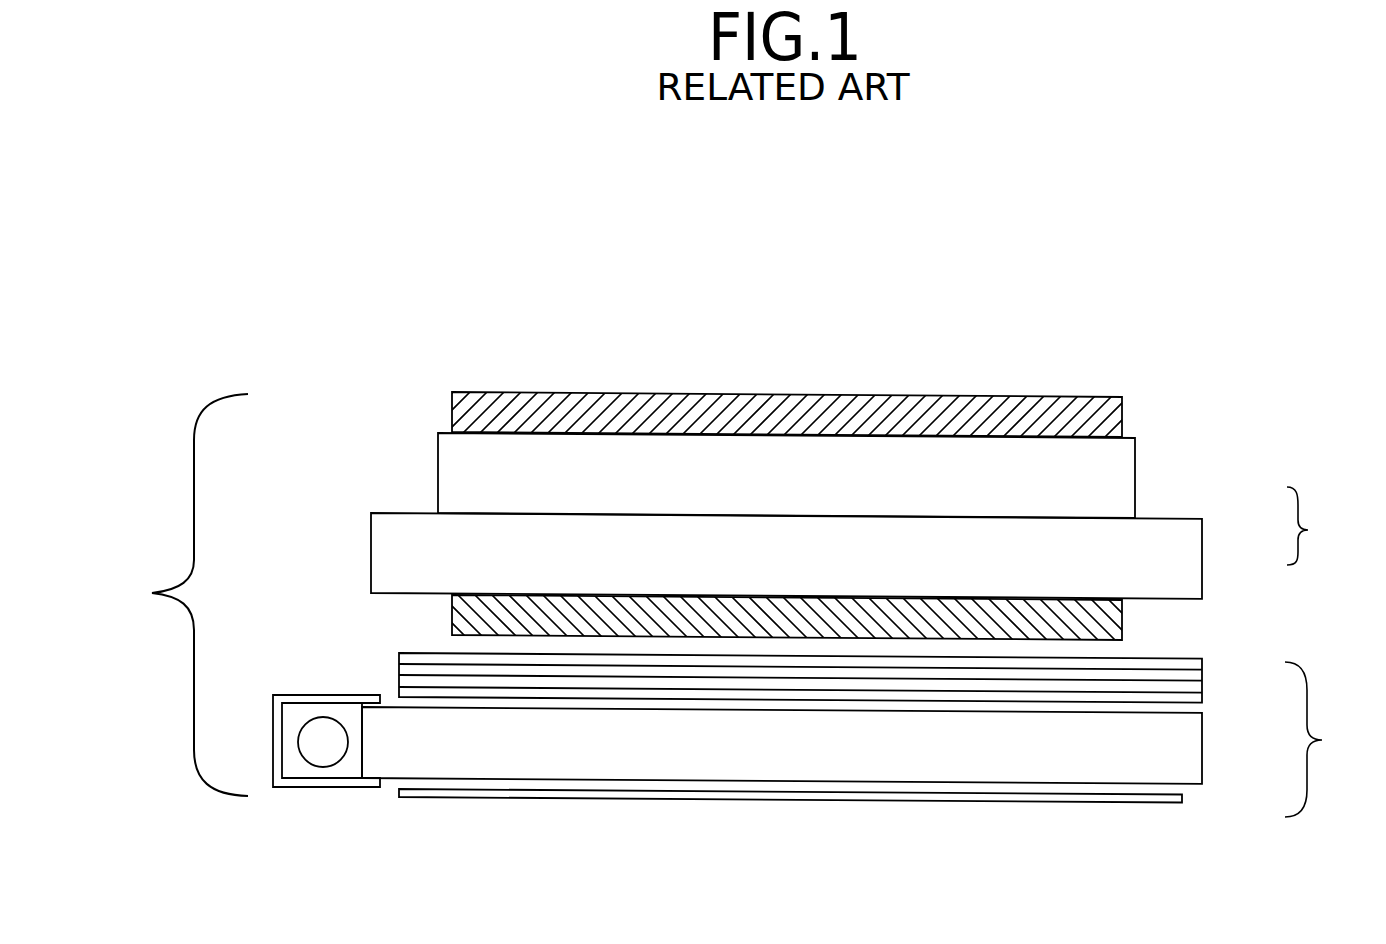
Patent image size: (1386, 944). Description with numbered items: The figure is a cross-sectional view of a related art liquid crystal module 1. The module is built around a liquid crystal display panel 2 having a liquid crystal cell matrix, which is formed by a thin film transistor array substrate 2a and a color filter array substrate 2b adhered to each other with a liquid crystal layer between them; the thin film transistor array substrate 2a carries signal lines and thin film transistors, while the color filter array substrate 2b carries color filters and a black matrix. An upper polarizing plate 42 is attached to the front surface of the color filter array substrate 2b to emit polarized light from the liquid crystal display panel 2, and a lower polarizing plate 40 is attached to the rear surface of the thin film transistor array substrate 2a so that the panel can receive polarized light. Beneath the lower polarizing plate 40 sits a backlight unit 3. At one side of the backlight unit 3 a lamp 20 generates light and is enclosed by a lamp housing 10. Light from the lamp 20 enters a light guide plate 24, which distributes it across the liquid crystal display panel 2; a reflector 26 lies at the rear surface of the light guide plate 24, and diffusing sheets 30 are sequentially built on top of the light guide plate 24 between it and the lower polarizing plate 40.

The liquid crystal module 1 is at (186, 595).
The liquid crystal display panel 2 is at (851, 516).
The thin film transistor array substrate 2a is at (1200, 563).
The color filter array substrate 2b is at (1120, 485).
The lower polarizing plate 40 is at (1122, 621).
The upper polarizing plate 42 is at (1122, 413).
The backlight unit 3 is at (805, 757).
The diffusing sheets 30 is at (1217, 662).
The light guide plate 24 is at (1152, 765).
The reflector 26 is at (516, 797).
The lamp 20 is at (322, 725).
The lamp housing 10 is at (279, 787).